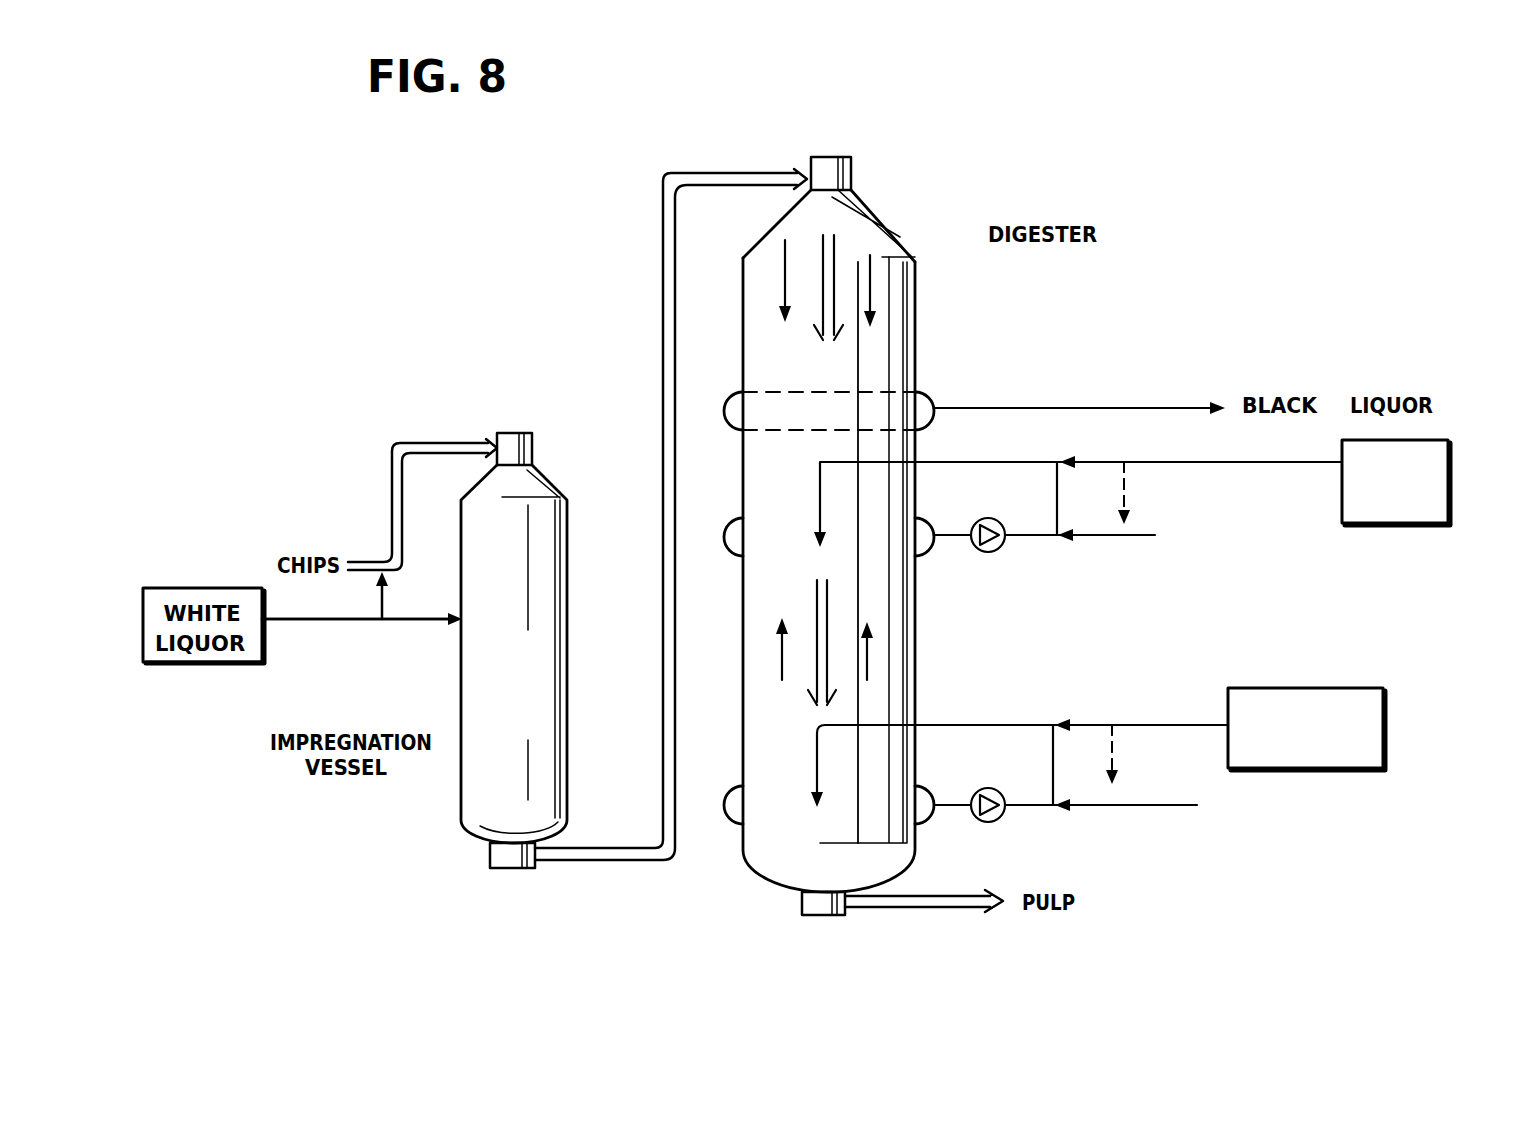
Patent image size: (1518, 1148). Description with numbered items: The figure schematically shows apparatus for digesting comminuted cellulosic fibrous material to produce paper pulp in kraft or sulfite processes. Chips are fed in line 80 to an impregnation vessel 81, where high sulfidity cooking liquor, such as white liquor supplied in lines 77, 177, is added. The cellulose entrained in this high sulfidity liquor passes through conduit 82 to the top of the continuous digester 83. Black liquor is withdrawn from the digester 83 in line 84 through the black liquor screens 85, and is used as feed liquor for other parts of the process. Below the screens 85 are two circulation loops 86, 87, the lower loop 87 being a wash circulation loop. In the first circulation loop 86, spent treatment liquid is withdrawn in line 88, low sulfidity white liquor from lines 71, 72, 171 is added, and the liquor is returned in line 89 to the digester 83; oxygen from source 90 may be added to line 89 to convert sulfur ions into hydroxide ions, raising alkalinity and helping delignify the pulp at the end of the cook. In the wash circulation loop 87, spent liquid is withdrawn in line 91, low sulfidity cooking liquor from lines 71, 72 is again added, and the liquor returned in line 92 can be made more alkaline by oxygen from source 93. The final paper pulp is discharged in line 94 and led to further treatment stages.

The low sulfidity white liquor line 71 is at (1155, 535).
The low sulfidity white liquor line 72 is at (1209, 654).
The low sulfidity white liquor line 171 is at (1186, 549).
The high sulfidity cooking liquor line 77 is at (290, 621).
The high sulfidity white liquor line 177 is at (290, 621).
The comminuted cellulose material feed line 80 is at (392, 494).
The impregnation vessel 81 is at (471, 629).
The conduit 82 is at (663, 280).
The digester 83 is at (885, 228).
The black liquor withdrawal line 84 is at (1096, 408).
The black liquor screens 85 is at (876, 419).
The circulation loop 86 is at (866, 528).
The wash circulation loop 87 is at (777, 727).
The spent treatment liquid withdrawal line 88 is at (1042, 537).
The return line 89 is at (972, 462).
The oxygen source 90 is at (1372, 524).
The spent liquid withdrawal line 91 is at (1030, 808).
The return line 92 is at (965, 725).
The oxygen source 93 is at (1365, 735).
The pulp discharge line 94 is at (905, 910).